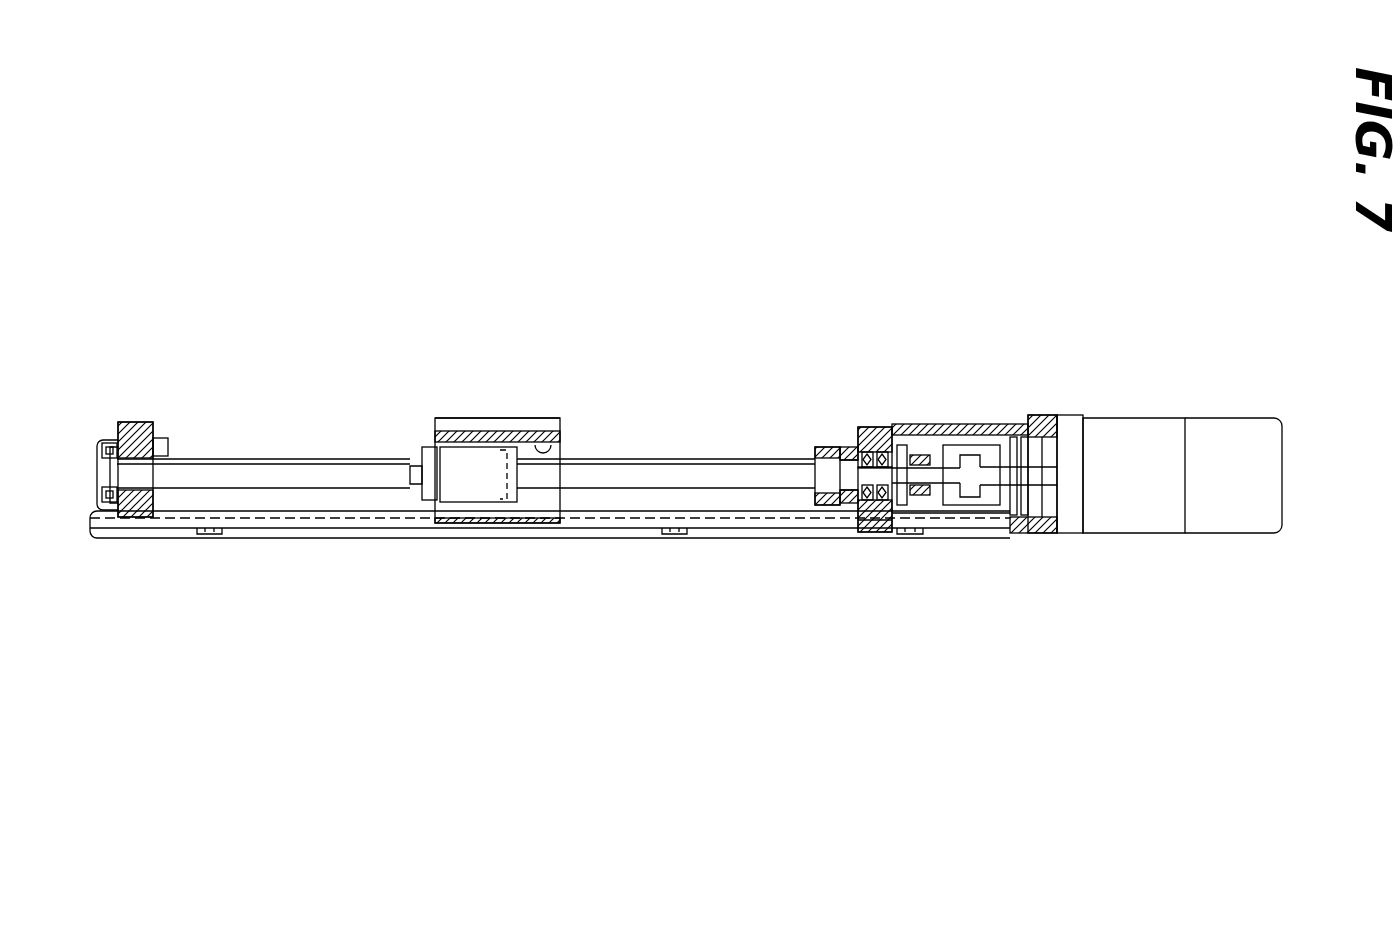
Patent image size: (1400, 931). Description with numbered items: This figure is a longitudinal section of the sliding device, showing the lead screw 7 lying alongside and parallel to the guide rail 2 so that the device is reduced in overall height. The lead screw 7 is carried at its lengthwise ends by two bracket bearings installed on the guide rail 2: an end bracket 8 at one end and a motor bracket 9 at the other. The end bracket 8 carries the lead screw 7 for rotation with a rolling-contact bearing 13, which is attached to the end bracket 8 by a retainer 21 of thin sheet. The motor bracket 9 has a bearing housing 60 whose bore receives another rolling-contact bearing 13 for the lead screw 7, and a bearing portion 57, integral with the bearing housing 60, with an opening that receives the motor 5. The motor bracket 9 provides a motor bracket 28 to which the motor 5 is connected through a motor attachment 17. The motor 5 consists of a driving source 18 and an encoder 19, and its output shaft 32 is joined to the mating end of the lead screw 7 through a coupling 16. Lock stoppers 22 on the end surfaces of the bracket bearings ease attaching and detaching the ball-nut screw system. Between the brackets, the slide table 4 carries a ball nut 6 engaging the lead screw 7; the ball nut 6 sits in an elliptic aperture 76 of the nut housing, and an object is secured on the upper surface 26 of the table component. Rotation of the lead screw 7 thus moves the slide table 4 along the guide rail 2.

The guide rail 2 is at (318, 505).
The slide table 4 is at (475, 418).
The motor 5 is at (1186, 412).
The ball nut 6 is at (487, 490).
The lead screw 7 is at (300, 470).
The end bracket 8 is at (138, 428).
The motor bracket 9 is at (935, 427).
The rolling-contact bearing 13 is at (105, 440).
The coupling 16 is at (978, 455).
The motor attachment 17 is at (1037, 422).
The driving source 18 is at (1147, 513).
The encoder 19 is at (1238, 513).
The retainer 21 is at (85, 450).
The lock stopper 22 is at (170, 438).
The upper surface 26 is at (503, 418).
The motor bracket 28 is at (957, 435).
The output shaft 32 is at (1025, 480).
The bearing portion 57 is at (1005, 500).
The bearing housing 60 is at (855, 527).
The elliptic aperture 76 is at (565, 455).